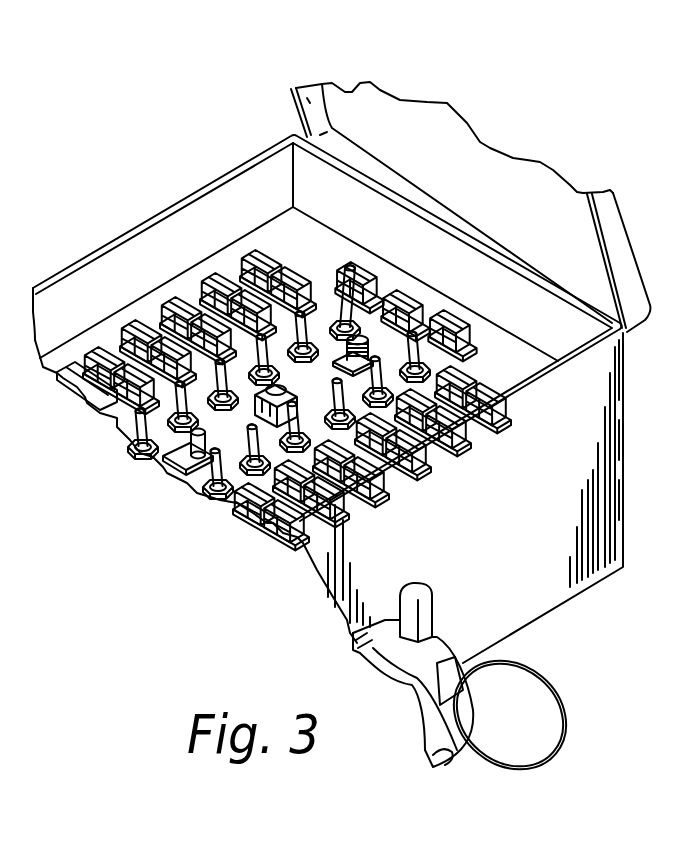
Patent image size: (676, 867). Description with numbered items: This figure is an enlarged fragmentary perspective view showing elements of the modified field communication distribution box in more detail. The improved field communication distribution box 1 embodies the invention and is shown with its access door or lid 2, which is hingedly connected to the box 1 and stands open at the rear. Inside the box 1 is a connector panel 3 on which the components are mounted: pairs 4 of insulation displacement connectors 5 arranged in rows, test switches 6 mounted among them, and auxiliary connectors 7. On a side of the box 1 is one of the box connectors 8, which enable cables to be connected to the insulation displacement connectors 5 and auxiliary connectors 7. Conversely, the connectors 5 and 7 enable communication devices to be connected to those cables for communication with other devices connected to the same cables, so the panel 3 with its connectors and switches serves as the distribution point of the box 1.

The field communication distribution box 1 is at (137, 194).
The access door or lid 2 is at (294, 92).
The connector panel 3 is at (268, 233).
The pairs of insulation displacement connectors 4 is at (430, 443).
The insulation displacement connectors 5 is at (167, 340).
The test switches 6 is at (343, 266).
The auxiliary connectors 7 is at (160, 457).
The box connectors 8 is at (353, 648).